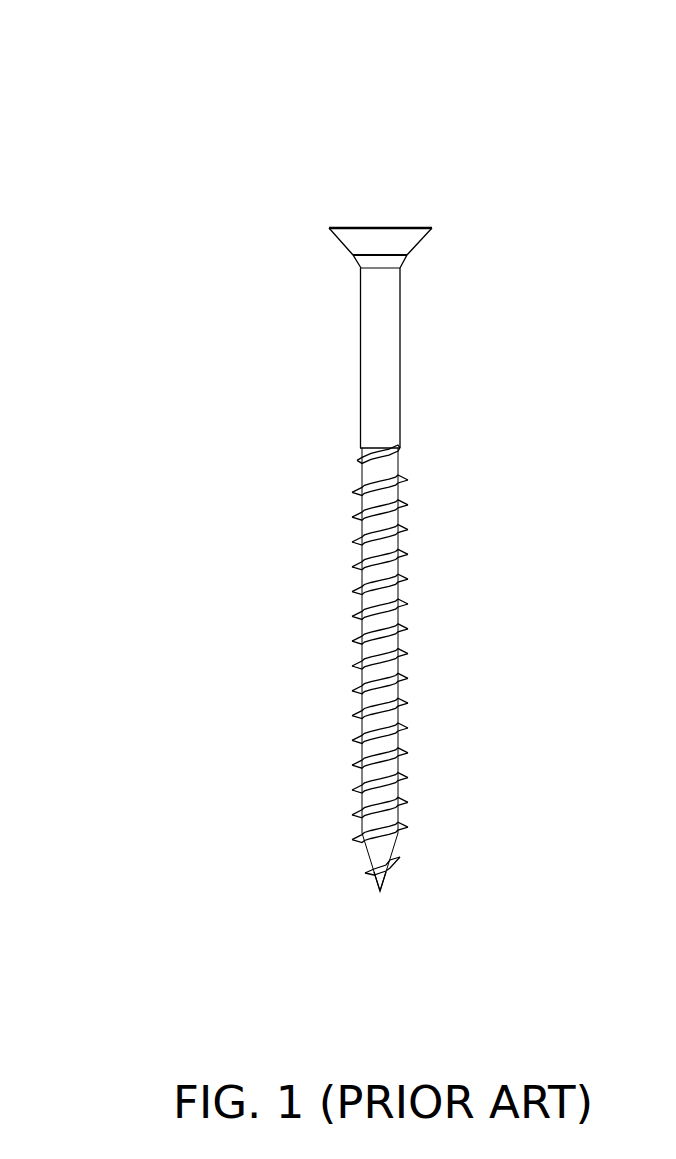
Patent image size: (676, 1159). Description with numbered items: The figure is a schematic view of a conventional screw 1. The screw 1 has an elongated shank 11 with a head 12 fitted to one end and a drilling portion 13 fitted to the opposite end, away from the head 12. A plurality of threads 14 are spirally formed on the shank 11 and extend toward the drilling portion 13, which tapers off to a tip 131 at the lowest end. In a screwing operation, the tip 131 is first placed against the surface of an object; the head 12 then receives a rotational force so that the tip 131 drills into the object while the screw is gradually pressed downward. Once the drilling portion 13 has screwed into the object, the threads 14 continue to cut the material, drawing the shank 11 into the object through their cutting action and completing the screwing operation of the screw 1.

The conventional screw 1 is at (88, 126).
The shank 11 is at (366, 374).
The head 12 is at (397, 226).
The drilling portion 13 is at (421, 845).
The tip 131 is at (382, 891).
The threads 14 is at (405, 553).